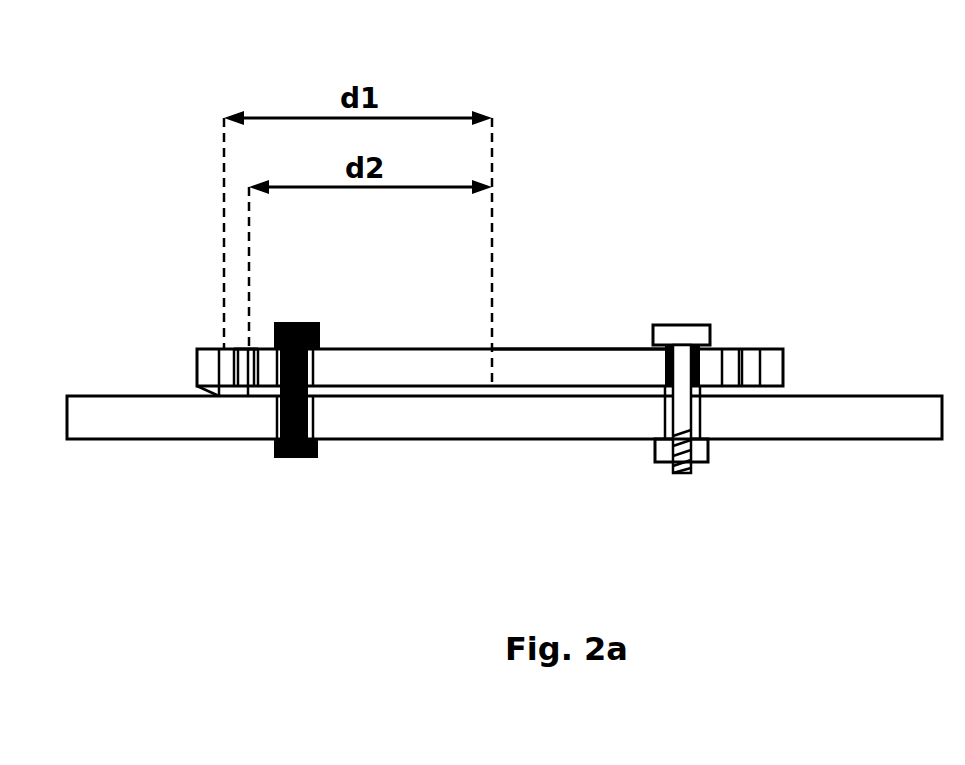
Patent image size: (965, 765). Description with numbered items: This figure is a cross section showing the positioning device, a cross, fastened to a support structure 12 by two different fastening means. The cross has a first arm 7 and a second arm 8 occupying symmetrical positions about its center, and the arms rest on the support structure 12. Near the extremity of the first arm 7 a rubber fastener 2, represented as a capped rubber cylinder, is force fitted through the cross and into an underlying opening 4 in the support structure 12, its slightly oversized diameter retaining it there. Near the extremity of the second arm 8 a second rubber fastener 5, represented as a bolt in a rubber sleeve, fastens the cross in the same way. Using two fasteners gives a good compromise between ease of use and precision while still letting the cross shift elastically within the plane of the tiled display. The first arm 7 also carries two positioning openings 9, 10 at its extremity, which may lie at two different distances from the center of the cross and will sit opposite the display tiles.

The rubber fastener 2 is at (301, 471).
The opening in the support structure 4 is at (264, 420).
The rubber fastener 5 is at (714, 353).
The first arm 7 is at (385, 334).
The second arm 8 is at (608, 334).
The positioning opening 9 is at (212, 362).
The positioning opening 10 is at (239, 340).
The support structure 12 is at (813, 413).